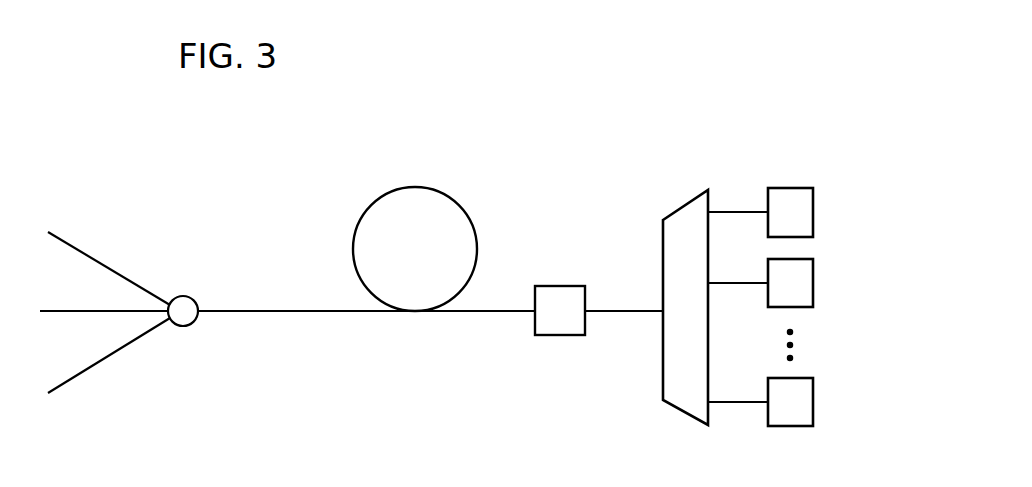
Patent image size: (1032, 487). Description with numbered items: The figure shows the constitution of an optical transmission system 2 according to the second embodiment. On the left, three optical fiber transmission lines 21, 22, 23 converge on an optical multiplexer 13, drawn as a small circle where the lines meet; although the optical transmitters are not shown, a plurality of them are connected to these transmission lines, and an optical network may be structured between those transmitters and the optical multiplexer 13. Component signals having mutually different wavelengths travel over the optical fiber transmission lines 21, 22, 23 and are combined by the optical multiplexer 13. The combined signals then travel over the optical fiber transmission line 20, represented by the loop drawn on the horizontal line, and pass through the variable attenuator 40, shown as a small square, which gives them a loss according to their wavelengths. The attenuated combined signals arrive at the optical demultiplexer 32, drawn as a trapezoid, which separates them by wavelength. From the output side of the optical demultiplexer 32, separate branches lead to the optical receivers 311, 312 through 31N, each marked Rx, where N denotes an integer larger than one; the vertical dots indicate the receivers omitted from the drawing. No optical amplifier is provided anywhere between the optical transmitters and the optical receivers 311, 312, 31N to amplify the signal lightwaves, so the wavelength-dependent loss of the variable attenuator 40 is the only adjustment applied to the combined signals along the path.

The optical transmission system 2 is at (606, 66).
The optical multiplexer 13 is at (187, 287).
The optical fiber transmission line 20 is at (415, 187).
The optical fiber transmission line 21 is at (70, 242).
The optical fiber transmission line 22 is at (42, 308).
The optical fiber transmission line 23 is at (107, 360).
The optical demultiplexer 32 is at (683, 208).
The variable attenuator 40 is at (555, 286).
The optical receiver 311 is at (815, 213).
The optical receiver 312 is at (815, 284).
The optical receiver 31N is at (815, 403).